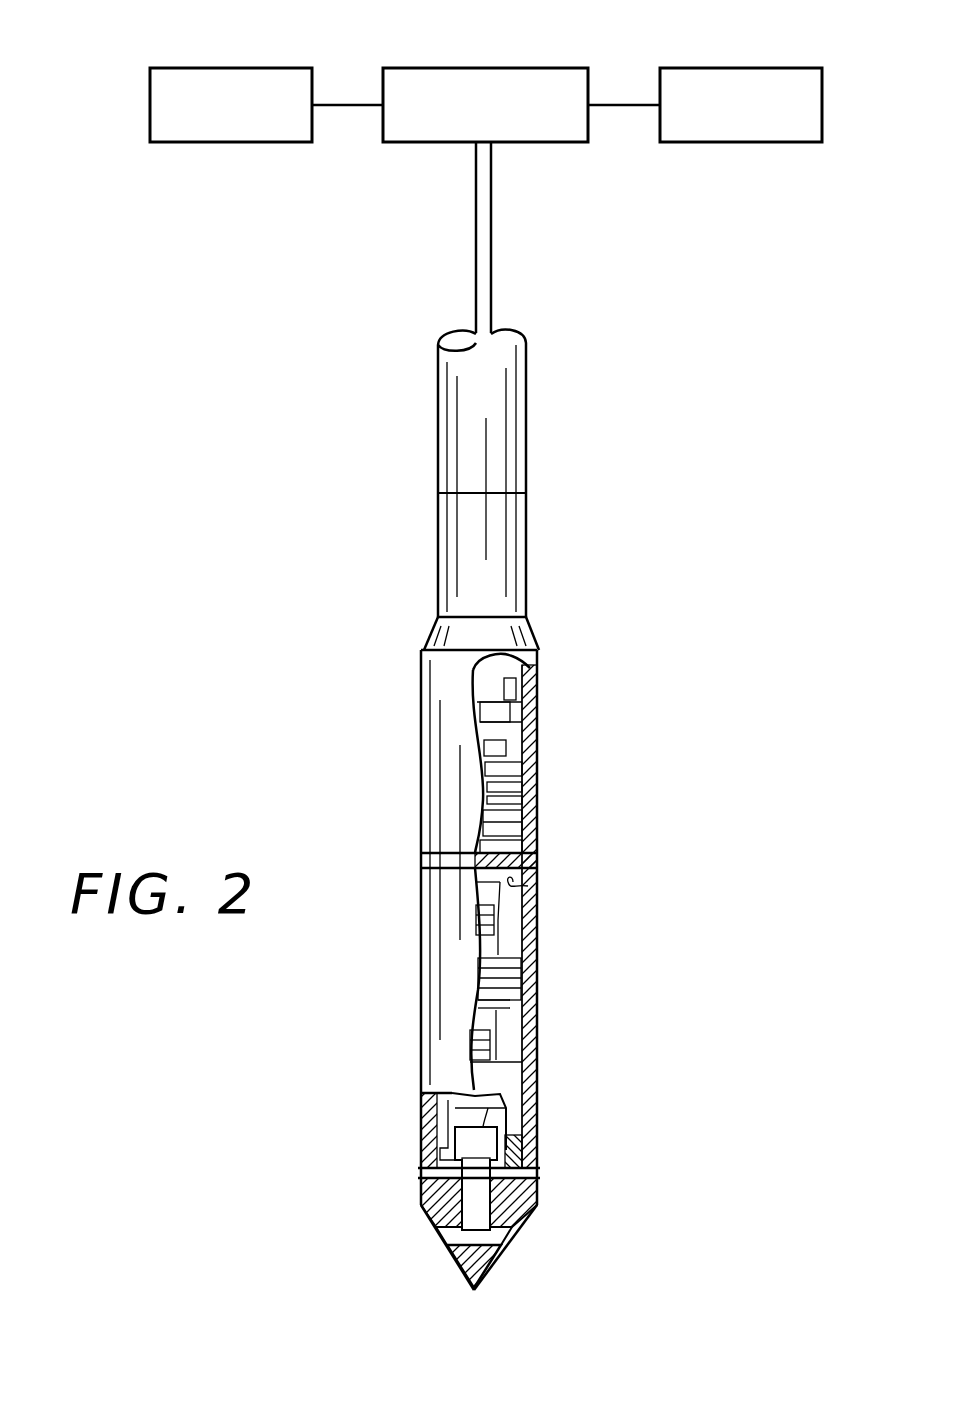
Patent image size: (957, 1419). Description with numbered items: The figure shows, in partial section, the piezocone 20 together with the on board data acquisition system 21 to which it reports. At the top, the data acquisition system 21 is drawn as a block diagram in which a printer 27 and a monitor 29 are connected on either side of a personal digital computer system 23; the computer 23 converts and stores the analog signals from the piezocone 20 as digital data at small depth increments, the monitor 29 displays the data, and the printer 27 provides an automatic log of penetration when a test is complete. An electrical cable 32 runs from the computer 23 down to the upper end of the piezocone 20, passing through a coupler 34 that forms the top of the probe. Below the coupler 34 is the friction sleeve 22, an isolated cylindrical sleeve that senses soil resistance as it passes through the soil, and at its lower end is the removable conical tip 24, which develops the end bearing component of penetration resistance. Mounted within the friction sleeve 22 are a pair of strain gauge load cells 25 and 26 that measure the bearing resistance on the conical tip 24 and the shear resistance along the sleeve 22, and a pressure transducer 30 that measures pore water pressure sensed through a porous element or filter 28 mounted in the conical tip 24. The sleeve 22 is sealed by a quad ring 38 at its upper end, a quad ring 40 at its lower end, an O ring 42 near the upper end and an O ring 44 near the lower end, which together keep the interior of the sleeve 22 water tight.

The piezocone 20 is at (380, 691).
The on board data acquisition system 21 is at (238, 180).
The friction sleeve 22 is at (425, 1112).
The personal digital computer system 23 is at (548, 72).
The conical tip 24 is at (497, 1262).
The strain gauge load cell 25 is at (500, 920).
The strain gauge load cell 26 is at (497, 1054).
The printer 27 is at (272, 69).
The porous element or filter 28 is at (515, 1234).
The monitor 29 is at (782, 72).
The pressure transducer 30 is at (503, 1112).
The electrical cable 32 is at (484, 262).
The coupler 34 is at (505, 398).
The quad ring 38 is at (538, 862).
The quad ring 40 is at (525, 1192).
The O ring 42 is at (528, 886).
The O ring 44 is at (515, 1142).